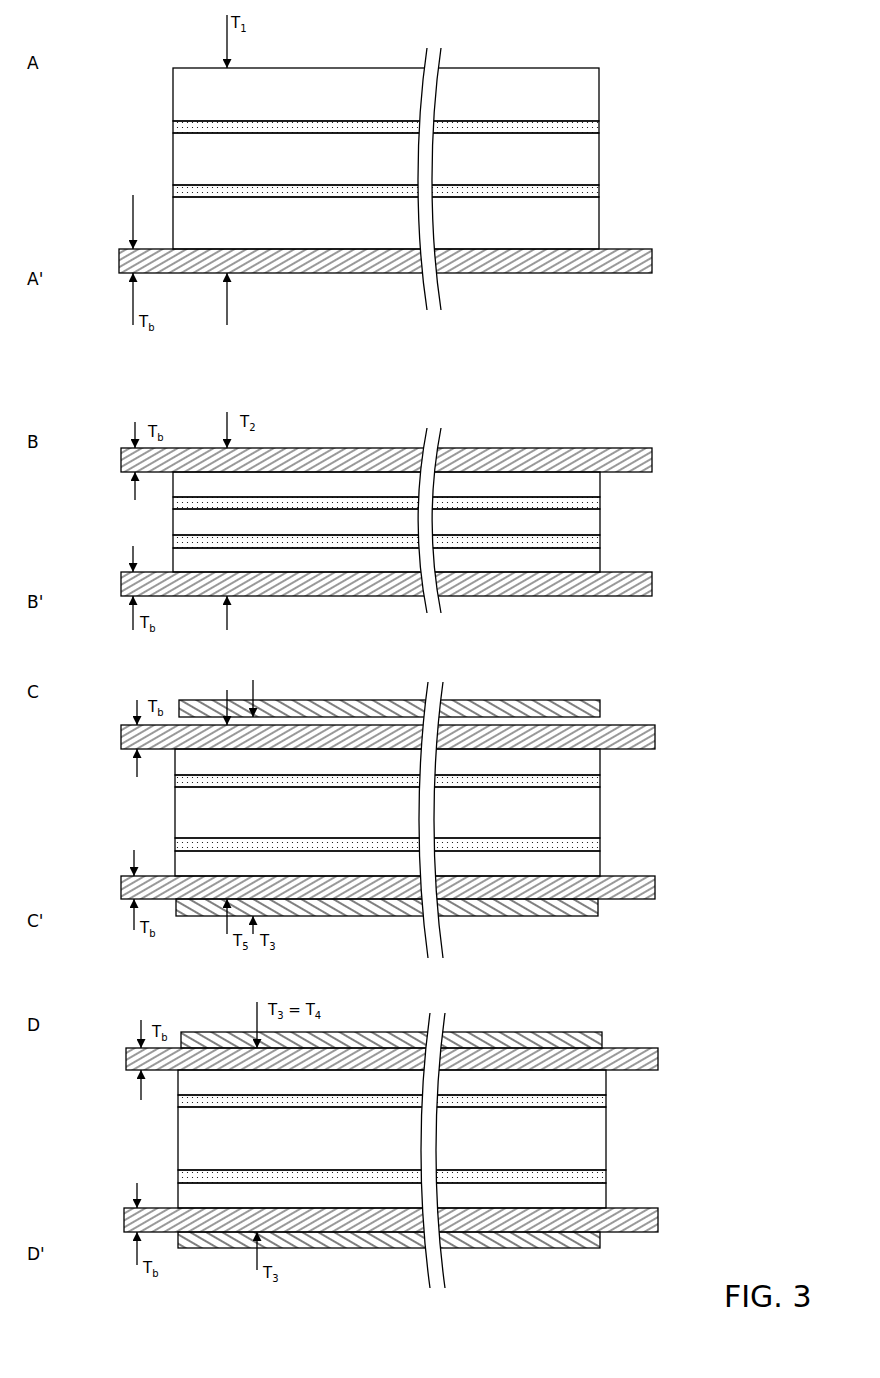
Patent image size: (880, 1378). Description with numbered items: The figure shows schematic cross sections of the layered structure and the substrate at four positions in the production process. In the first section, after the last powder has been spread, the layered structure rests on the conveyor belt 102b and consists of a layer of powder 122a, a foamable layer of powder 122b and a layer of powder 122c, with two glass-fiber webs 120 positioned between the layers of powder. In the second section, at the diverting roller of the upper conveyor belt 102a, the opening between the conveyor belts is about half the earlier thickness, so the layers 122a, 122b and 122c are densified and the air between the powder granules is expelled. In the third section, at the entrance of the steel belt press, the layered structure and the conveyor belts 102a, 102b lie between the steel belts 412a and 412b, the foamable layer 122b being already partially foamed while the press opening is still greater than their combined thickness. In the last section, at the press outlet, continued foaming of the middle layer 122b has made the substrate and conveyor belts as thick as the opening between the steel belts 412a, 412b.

The glass-fiber web 120 is at (592, 128).
The layer of powder 122a is at (389, 702).
The foamable layer of powder 122b is at (389, 651).
The layer of powder 122c is at (389, 581).
The upper conveyor belt 102a is at (640, 461).
The conveyor belt 102b is at (640, 261).
The steel belt 412a is at (602, 708).
The steel belt 412b is at (592, 907).